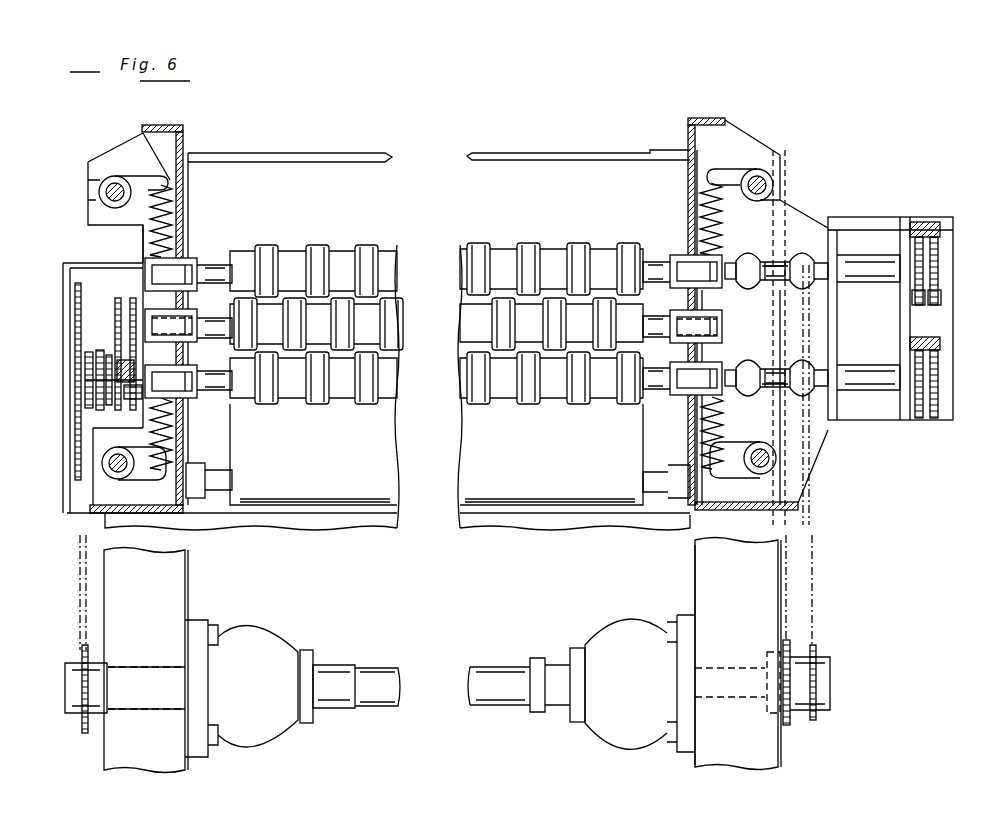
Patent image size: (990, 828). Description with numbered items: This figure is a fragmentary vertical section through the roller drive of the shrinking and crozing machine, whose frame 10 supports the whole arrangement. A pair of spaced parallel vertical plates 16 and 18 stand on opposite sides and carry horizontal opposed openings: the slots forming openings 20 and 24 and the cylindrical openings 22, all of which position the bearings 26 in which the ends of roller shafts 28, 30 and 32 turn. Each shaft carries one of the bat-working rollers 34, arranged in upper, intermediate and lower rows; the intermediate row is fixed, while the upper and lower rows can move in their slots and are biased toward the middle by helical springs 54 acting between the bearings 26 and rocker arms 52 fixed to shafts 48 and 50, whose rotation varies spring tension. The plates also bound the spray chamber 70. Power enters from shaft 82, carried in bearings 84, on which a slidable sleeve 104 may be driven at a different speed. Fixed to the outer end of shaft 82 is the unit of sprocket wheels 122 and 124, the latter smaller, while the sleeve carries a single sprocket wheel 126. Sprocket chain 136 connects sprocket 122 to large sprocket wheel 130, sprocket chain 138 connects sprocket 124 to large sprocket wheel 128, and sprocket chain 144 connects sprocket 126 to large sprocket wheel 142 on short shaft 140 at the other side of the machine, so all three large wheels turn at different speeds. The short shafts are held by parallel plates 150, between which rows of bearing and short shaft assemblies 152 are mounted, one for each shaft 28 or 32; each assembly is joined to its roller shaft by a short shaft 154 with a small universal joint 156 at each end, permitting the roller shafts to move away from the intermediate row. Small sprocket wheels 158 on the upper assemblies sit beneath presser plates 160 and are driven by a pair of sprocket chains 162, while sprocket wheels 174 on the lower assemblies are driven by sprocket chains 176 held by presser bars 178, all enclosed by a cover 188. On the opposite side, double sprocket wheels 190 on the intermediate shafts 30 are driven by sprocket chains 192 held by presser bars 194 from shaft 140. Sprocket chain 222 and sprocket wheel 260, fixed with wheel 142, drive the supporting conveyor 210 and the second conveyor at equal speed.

The frame 10 is at (697, 563).
The vertical plate 16 is at (183, 197).
The vertical plate 18 is at (690, 195).
The opening 20 is at (189, 226).
The opening 22 is at (190, 315).
The opening 24 is at (185, 418).
The bearing 26 is at (190, 262).
The roller shaft 28 is at (215, 268).
The roller shaft 30 is at (215, 320).
The roller shaft 32 is at (220, 395).
The bat-working roller 34 is at (370, 250).
The shaft 48 is at (115, 178).
The shaft 50 is at (105, 478).
The rocker arm 52 is at (145, 172).
The helical spring 54 is at (168, 184).
The spray chamber 70 is at (612, 160).
The shaft 82 is at (375, 668).
The bearing 84 is at (255, 632).
The sleeve 104 is at (322, 665).
The sprocket wheel 122 is at (790, 722).
The sprocket wheel 124 is at (818, 655).
The sprocket wheel 126 is at (82, 655).
The large sprocket wheel 128 is at (825, 460).
The large sprocket wheel 130 is at (783, 158).
The sprocket chain 136 is at (808, 560).
The sprocket chain 138 is at (815, 600).
The short shaft 140 is at (80, 372).
The large sprocket wheel 142 is at (78, 285).
The sprocket chain 144 is at (80, 580).
The plate 150 is at (898, 313).
The bearing and short shaft assembly 152 is at (847, 256).
The short shaft 154 is at (772, 285).
The universal joint 156 is at (792, 258).
The small sprocket wheel 158 is at (935, 245).
The presser plate 160 is at (918, 225).
The sprocket chain 162 is at (940, 292).
The small sprocket wheel 174 is at (940, 412).
The sprocket chain 176 is at (942, 360).
The presser bar 178 is at (920, 337).
The cover 188 is at (942, 262).
The small sprocket wheel 190 is at (118, 300).
The sprocket chain 192 is at (120, 360).
The presser bar 194 is at (140, 372).
The supporting conveyor 210 is at (462, 450).
The sprocket chain 222 is at (100, 355).
The sprocket wheel 260 is at (95, 355).